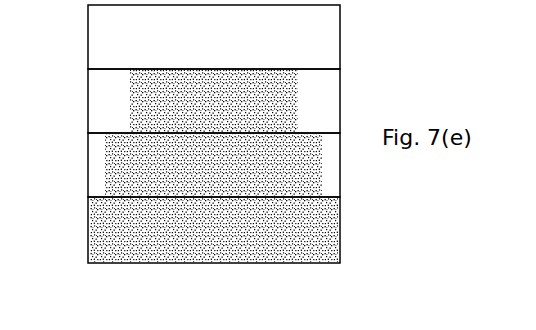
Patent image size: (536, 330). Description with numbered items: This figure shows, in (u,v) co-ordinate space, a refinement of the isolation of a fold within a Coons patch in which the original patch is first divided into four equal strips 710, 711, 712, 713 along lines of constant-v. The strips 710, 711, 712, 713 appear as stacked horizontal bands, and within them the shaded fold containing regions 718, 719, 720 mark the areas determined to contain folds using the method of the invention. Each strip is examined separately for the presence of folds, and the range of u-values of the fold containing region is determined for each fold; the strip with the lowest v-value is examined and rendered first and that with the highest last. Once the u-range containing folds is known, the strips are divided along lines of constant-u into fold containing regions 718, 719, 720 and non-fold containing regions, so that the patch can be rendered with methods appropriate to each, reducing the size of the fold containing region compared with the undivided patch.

The strip 710 is at (87, 39).
The strip 711 is at (87, 101).
The strip 712 is at (87, 160).
The strip 713 is at (87, 227).
The fold containing region 718 is at (245, 93).
The fold containing region 719 is at (325, 168).
The fold containing region 720 is at (325, 222).